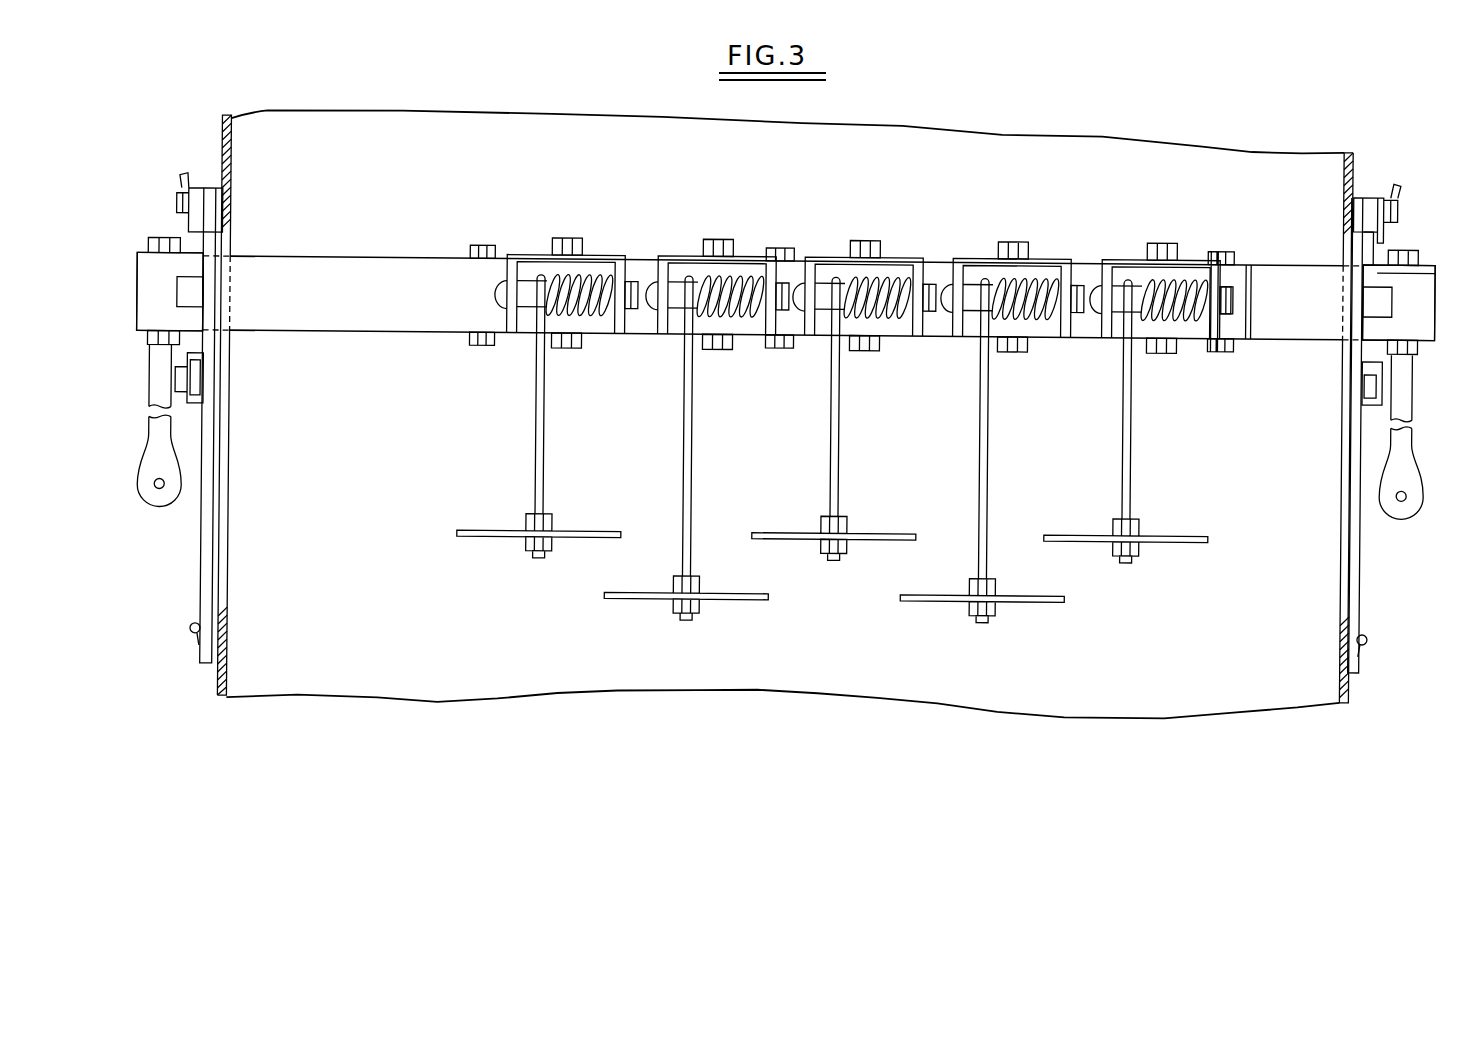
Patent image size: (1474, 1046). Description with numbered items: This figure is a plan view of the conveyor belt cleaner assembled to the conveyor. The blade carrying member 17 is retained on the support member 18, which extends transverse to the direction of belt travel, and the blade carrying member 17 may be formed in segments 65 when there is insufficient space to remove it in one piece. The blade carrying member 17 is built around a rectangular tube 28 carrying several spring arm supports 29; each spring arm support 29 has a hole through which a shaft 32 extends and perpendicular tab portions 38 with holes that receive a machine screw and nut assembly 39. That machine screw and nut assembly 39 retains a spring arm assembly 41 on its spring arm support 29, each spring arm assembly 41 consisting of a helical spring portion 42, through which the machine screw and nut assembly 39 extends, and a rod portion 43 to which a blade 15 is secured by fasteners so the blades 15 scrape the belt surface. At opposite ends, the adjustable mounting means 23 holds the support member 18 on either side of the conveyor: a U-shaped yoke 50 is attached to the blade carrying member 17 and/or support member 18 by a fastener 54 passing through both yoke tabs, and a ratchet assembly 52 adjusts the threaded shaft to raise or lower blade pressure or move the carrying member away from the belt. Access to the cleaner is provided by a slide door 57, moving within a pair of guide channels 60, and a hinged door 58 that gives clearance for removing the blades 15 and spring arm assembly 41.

The blade 15 is at (608, 534).
The blade carrying member 17 is at (412, 325).
The support member 18 is at (1433, 314).
The adjustable mounting means 23 is at (141, 330).
The rectangular tube 28 is at (420, 268).
The spring arm support 29 is at (807, 322).
The shaft 32 is at (712, 247).
The tab portion 38 is at (516, 270).
The machine screw and nut assembly 39 is at (527, 312).
The spring arm assembly 41 is at (885, 276).
The helical spring portion 42 is at (597, 276).
The rod portion 43 is at (690, 456).
The U-shaped yoke 50 is at (164, 263).
The ratchet assembly 52 is at (165, 504).
The fastener 54 is at (152, 250).
The slide door 57 is at (200, 295).
The hinged door 58 is at (208, 537).
The guide channels 60 is at (205, 235).
The segment 65 is at (1238, 268).